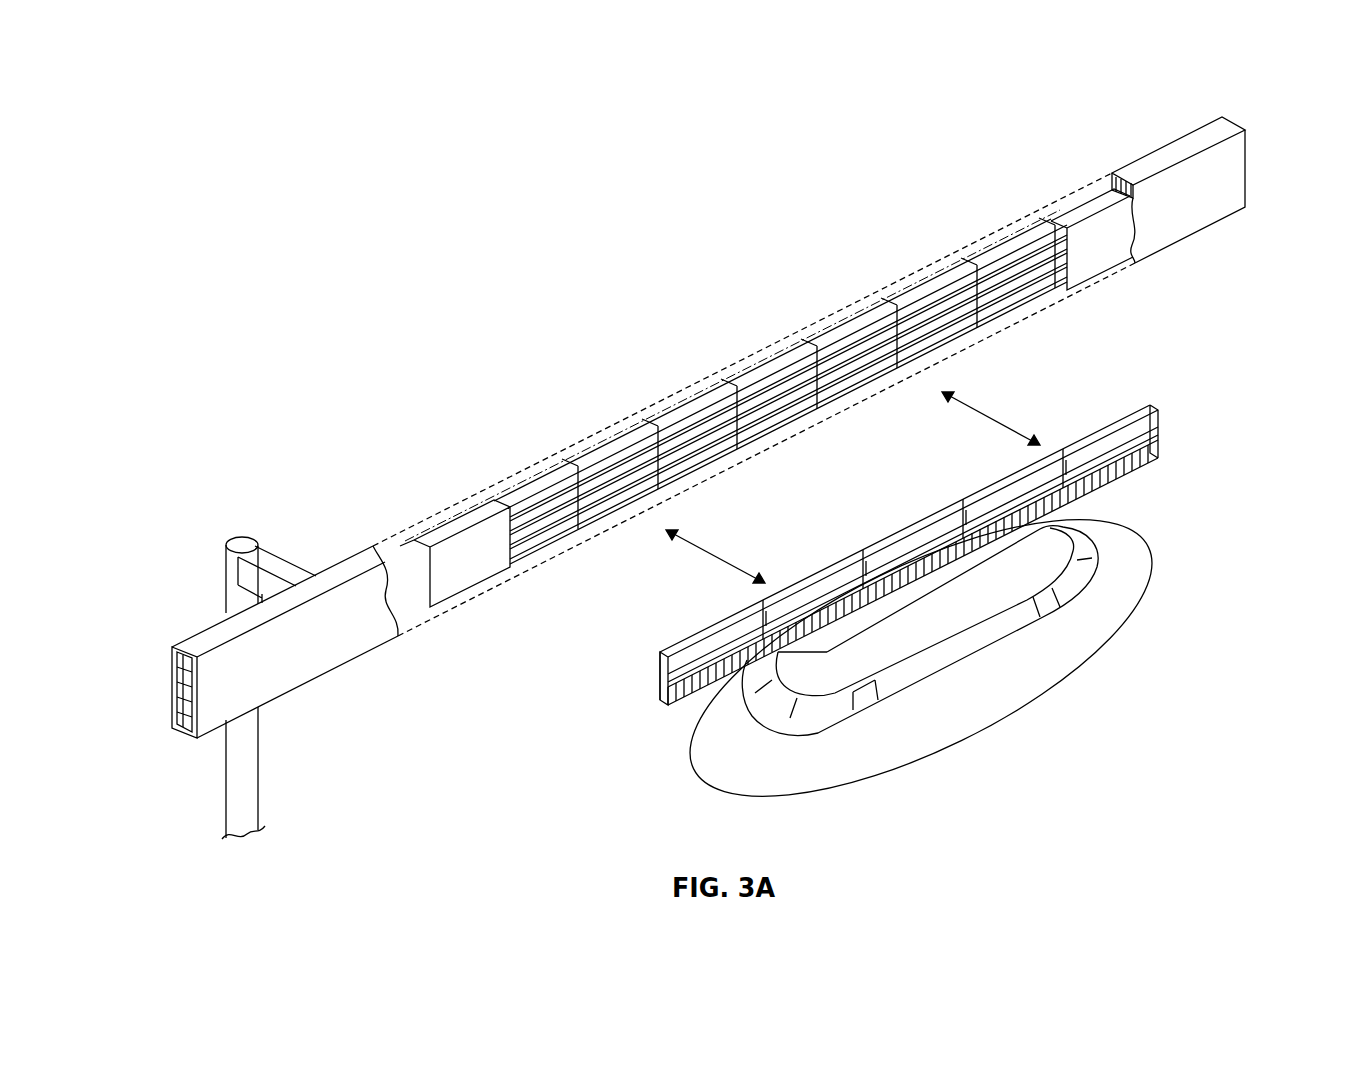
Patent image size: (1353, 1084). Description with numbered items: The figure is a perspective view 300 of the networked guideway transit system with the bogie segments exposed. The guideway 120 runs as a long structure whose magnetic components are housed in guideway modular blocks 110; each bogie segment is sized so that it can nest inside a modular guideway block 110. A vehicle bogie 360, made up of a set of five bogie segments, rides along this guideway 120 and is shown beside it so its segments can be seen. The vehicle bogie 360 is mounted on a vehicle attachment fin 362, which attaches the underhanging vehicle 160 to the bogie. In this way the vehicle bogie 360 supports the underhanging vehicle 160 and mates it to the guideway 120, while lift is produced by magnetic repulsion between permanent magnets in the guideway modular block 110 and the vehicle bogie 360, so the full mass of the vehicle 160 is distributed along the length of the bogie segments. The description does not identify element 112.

The perspective view 300 is at (318, 324).
The guideway modular block 110 is at (432, 546).
The support post 112 is at (242, 797).
The guideway 120 is at (1207, 233).
The vehicle bogie 360 is at (1150, 417).
The vehicle attachment fin 362 is at (1008, 543).
The underhanging vehicle 160 is at (1137, 578).